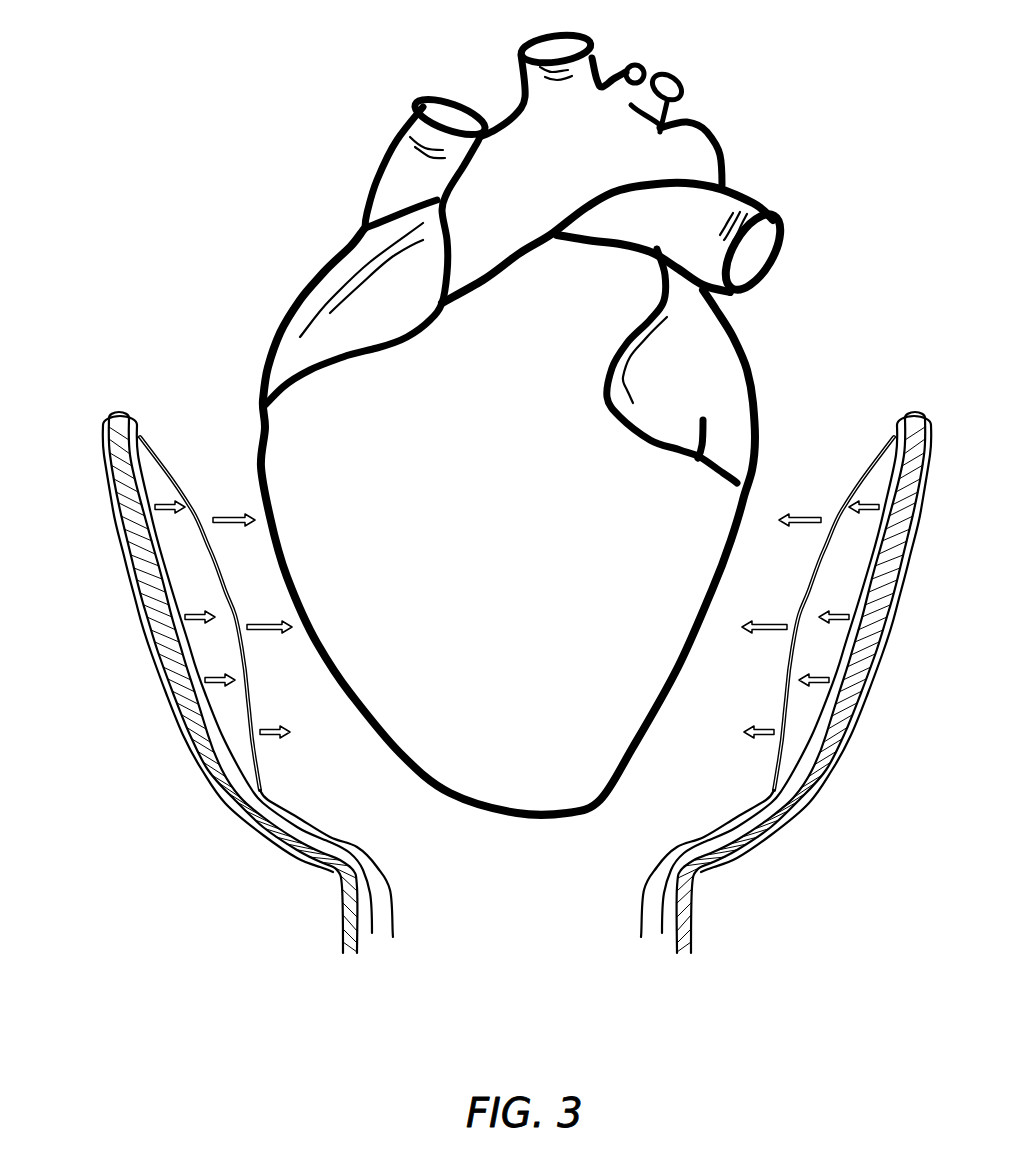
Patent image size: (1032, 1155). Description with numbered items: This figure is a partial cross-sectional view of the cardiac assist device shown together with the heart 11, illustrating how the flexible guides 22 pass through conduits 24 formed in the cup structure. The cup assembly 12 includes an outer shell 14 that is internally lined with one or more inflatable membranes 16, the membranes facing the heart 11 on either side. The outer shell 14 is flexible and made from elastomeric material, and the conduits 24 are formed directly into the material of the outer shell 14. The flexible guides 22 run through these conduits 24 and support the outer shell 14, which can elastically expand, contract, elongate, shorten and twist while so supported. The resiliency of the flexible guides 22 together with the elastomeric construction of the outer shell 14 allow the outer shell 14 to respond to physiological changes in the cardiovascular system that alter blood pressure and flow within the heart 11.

The heart 11 is at (333, 285).
The cup assembly 12 is at (117, 530).
The outer shell 14 is at (100, 437).
The inflatable membranes 16 is at (153, 447).
The flexible guides 22 is at (113, 414).
The conduits 24 is at (107, 417).